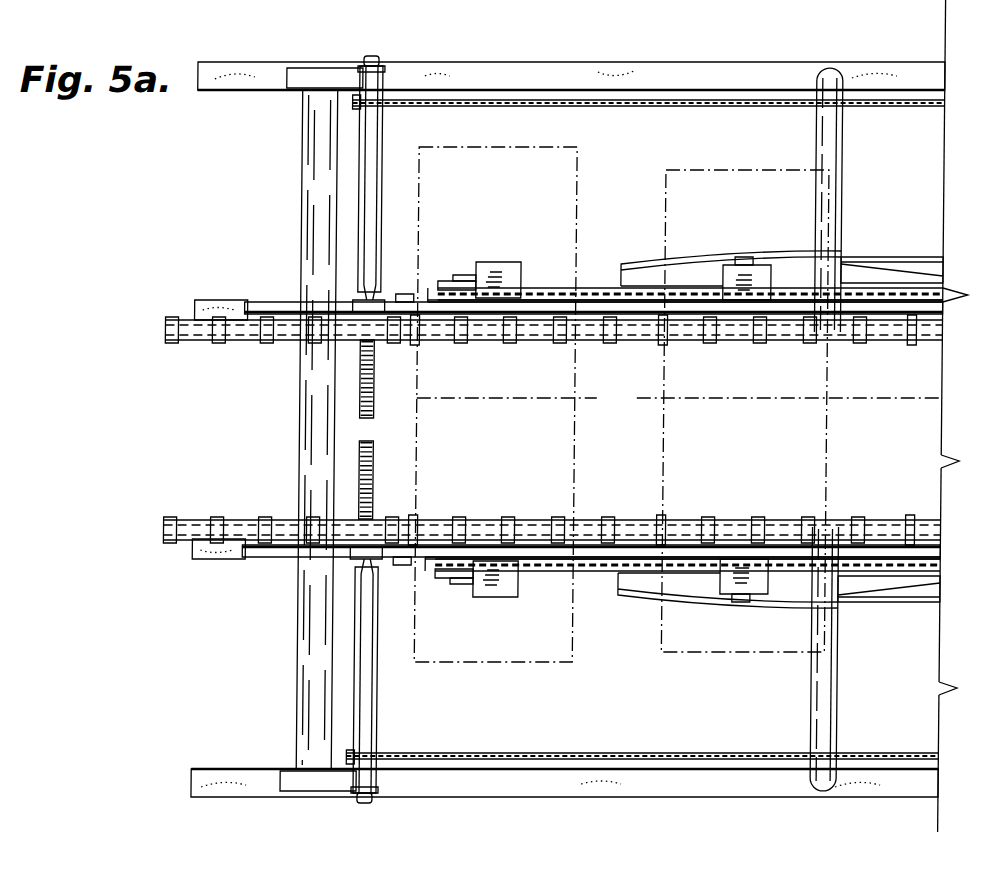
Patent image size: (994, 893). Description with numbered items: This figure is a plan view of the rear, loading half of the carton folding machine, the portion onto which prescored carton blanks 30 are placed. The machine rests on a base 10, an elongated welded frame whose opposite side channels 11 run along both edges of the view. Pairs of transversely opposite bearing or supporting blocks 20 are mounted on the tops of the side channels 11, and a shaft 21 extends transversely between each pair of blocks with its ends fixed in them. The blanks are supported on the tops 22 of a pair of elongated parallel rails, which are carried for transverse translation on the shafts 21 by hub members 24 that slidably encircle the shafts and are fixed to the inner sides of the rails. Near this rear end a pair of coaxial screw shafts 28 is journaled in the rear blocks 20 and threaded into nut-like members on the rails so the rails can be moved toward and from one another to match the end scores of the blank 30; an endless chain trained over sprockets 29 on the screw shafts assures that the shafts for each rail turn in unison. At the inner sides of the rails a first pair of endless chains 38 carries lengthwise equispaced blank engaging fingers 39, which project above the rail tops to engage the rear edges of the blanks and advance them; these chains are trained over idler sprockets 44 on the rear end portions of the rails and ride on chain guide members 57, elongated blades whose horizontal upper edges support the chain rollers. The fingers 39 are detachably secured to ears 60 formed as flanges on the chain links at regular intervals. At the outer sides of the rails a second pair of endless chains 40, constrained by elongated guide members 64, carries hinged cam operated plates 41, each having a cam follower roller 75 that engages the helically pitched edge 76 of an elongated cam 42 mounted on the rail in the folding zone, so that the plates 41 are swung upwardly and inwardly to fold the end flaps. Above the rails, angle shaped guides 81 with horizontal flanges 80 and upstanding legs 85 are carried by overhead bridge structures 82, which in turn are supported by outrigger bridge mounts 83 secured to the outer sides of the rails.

The base 10 is at (198, 737).
The side channel 11 is at (556, 72).
The bearing block 20 is at (314, 68).
The shaft 21 is at (305, 645).
The rail top 22 is at (224, 300).
The hub member 24 is at (300, 334).
The screw shaft 28 is at (642, 107).
The sprocket 29 is at (385, 104).
The carton blank 30 is at (655, 410).
The endless chain 38 is at (650, 342).
The blank engaging finger 39 is at (420, 344).
The endless chain 40 is at (590, 296).
The hinged cam operated plate 41 is at (500, 270).
The cam 42 is at (868, 272).
The idler sprocket 44 is at (178, 340).
The chain guide member 57 is at (536, 342).
The ear 60 is at (394, 342).
The guide member 64 is at (548, 290).
The cam follower roller 75 is at (746, 257).
The cam edge 76 is at (682, 266).
The horizontal flange 80 is at (280, 302).
The angle shaped guide 81 is at (408, 300).
The bridge structure 82 is at (373, 210).
The bridge mount 83 is at (384, 180).
The upstanding leg 85 is at (490, 322).